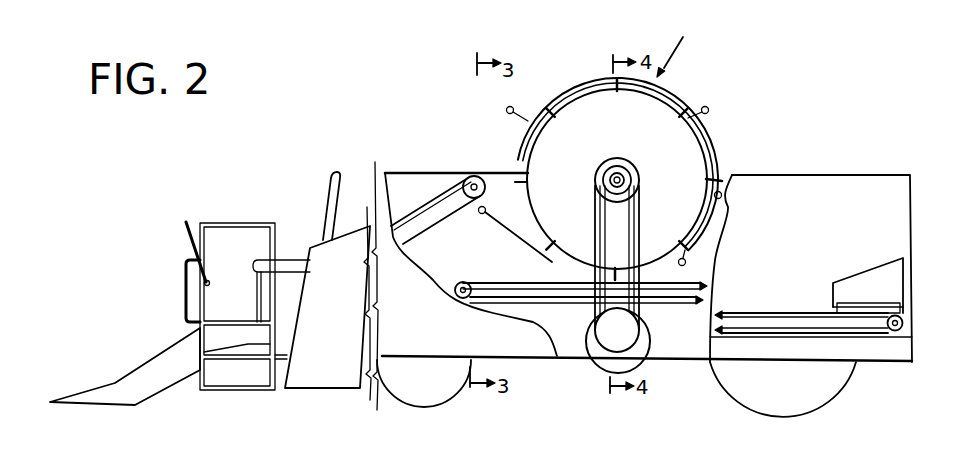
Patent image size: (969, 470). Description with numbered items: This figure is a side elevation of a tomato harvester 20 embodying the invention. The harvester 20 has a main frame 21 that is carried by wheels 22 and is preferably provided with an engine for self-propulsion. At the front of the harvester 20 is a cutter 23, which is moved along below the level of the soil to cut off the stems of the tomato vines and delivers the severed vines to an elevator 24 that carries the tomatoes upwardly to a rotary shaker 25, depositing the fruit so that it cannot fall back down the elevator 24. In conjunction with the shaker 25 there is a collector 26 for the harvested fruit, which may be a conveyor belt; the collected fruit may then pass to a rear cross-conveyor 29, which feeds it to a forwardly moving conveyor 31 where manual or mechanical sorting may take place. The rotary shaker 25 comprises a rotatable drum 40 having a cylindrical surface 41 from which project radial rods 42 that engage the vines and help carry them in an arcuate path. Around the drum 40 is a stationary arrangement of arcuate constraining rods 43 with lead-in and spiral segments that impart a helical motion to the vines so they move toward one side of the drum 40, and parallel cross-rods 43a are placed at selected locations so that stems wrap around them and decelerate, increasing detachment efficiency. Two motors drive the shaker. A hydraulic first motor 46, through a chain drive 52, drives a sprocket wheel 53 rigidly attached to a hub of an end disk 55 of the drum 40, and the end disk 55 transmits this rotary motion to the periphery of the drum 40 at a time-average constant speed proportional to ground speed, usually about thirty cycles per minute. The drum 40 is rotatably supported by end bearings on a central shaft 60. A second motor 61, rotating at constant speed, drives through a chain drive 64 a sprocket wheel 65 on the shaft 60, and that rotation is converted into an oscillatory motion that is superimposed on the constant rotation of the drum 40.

The tomato harvester 20 is at (273, 160).
The main frame 21 is at (533, 349).
The wheels 22 is at (424, 394).
The cutter 23 is at (50, 402).
The elevator 24 is at (441, 188).
The rotary shaker 25 is at (683, 49).
The collector 26 is at (488, 283).
The rear cross-conveyor 29 is at (853, 303).
The forwardly moving conveyor 31 is at (783, 312).
The rotatable drum 40 is at (663, 110).
The cylindrical surface 41 is at (575, 98).
The radial rods 42 is at (544, 240).
The arcuate constraining rods 43 is at (548, 254).
The cross-rods 43a is at (719, 192).
The hydraulic first motor 46 is at (606, 361).
The chain drive 52 is at (640, 218).
The sprocket wheel 53 is at (616, 158).
The end disk 55 is at (645, 152).
The central shaft 60 is at (605, 172).
The second motor 61 is at (602, 331).
The chain drive 64 is at (632, 243).
The sprocket wheel 65 is at (629, 184).